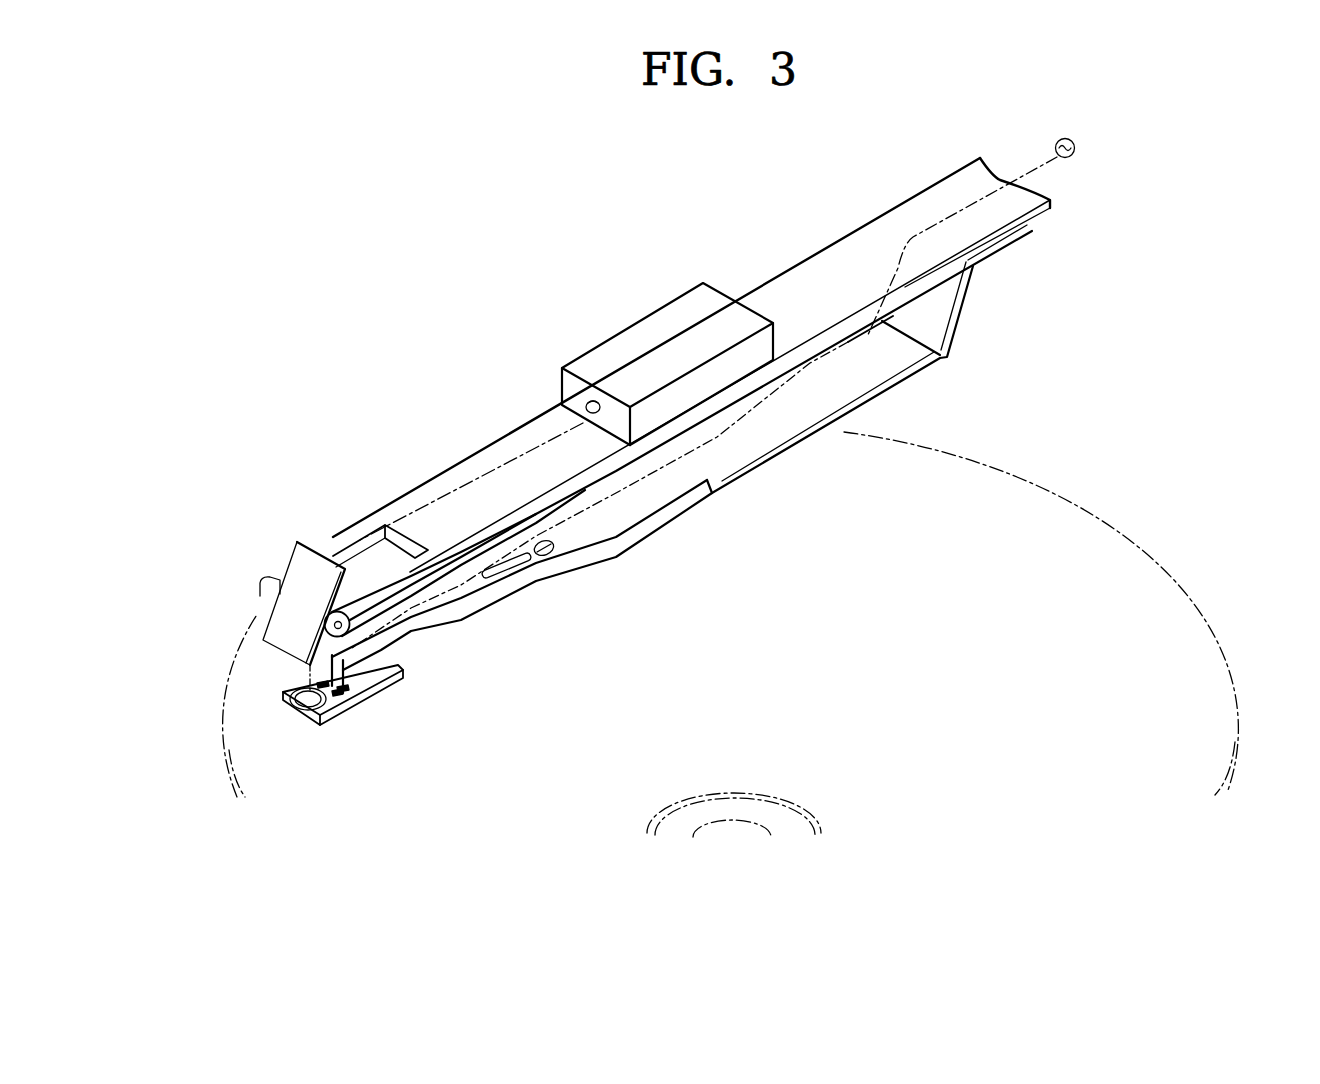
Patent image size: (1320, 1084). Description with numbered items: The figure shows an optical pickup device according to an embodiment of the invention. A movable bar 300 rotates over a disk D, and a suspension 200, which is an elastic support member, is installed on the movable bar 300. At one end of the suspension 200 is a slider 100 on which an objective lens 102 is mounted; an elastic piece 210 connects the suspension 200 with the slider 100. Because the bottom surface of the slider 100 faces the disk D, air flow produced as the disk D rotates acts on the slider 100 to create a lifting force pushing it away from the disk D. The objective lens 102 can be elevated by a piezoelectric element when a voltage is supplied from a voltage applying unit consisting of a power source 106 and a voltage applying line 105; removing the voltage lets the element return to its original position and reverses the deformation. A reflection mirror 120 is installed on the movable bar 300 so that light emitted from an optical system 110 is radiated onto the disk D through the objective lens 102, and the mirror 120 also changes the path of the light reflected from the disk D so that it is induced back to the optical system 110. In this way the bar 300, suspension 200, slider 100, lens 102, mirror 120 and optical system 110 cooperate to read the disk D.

The slider 100 is at (353, 712).
The objective lens 102 is at (295, 712).
The voltage applying line 105 is at (982, 197).
The power source 106 is at (1074, 145).
The optical system 110 is at (623, 350).
The reflection mirror 120 is at (297, 567).
The suspension 200 is at (907, 380).
The elastic piece 210 is at (353, 692).
The movable bar 300 is at (828, 268).
The disk D is at (1128, 573).